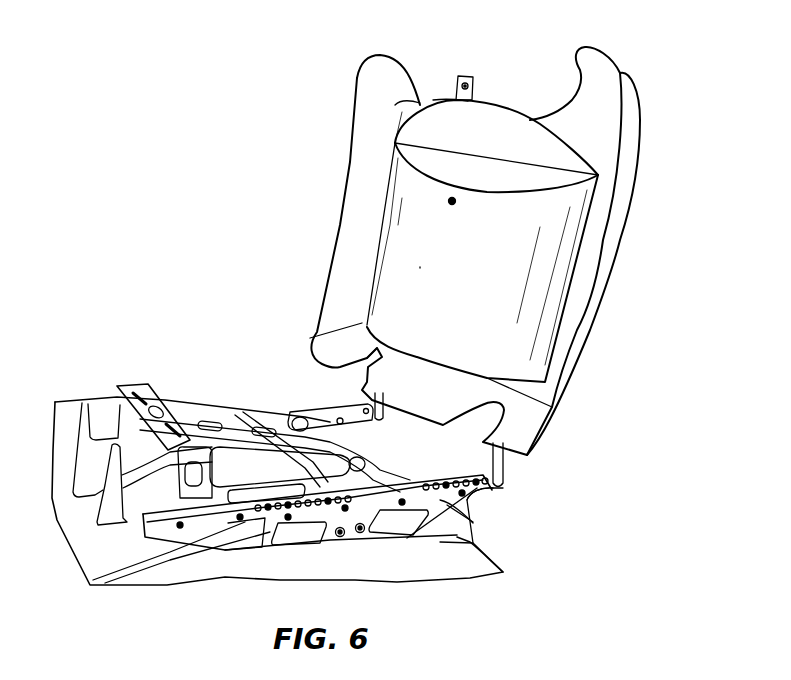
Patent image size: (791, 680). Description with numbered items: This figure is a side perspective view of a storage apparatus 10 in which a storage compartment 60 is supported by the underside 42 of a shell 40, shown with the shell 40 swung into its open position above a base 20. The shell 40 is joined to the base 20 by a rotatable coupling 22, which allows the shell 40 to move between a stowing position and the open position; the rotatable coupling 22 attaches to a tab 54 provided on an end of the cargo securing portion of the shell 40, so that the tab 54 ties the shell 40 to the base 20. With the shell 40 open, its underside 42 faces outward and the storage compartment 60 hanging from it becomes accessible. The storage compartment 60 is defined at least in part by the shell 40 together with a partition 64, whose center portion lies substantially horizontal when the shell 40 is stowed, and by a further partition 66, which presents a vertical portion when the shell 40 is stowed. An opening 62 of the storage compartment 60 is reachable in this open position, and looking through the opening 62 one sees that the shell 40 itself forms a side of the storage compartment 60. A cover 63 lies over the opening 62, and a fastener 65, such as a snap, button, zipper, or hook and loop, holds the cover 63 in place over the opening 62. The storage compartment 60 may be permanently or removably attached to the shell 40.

The storage apparatus 10 is at (292, 101).
The base 20 is at (470, 523).
The rotatable coupling 22 is at (377, 421).
The shell 40 is at (630, 120).
The underside 42 is at (373, 240).
The tab 54 is at (373, 404).
The storage compartment 60 is at (345, 301).
The opening 62 is at (422, 161).
The cover 63 is at (430, 125).
The partition 64 is at (420, 267).
The fastener 65 is at (467, 76).
The partition 66 is at (367, 383).